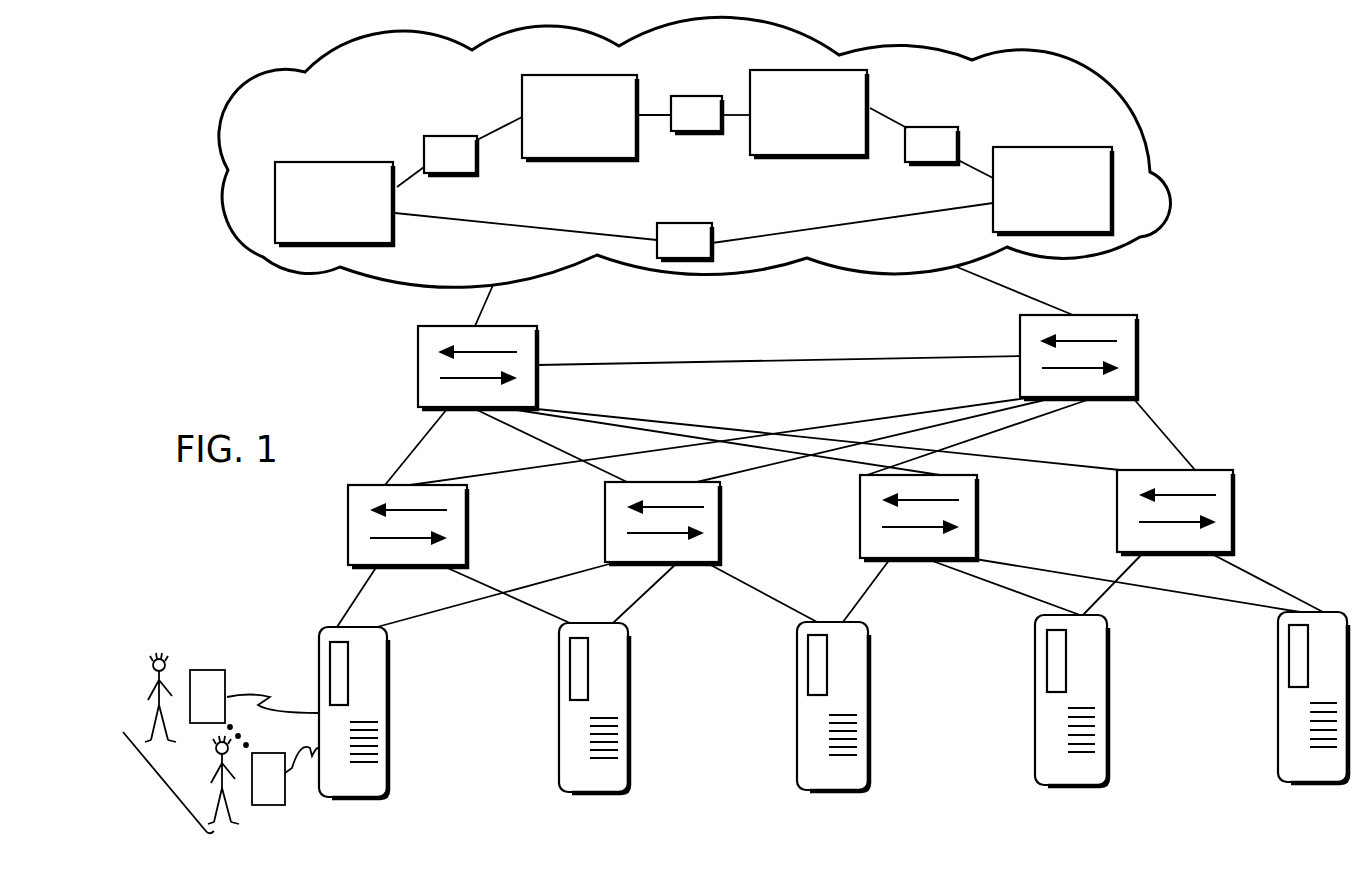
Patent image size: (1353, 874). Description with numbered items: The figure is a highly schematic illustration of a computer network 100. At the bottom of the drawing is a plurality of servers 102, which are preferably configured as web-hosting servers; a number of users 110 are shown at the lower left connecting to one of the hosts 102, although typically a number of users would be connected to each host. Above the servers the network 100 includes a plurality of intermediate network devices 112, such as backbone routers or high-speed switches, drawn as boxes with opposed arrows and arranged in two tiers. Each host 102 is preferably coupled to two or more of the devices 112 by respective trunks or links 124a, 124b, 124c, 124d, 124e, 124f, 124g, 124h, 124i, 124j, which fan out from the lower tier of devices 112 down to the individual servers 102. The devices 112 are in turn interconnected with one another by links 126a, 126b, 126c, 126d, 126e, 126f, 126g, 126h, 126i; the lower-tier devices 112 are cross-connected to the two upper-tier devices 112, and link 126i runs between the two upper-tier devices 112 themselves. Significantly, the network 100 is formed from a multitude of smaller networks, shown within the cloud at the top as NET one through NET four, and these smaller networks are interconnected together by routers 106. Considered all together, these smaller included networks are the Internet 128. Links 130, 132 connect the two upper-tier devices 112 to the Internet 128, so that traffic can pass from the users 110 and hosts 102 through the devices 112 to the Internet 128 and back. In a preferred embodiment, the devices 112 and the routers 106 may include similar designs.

The computer network 100 is at (1262, 438).
The server 102 is at (320, 662).
The router 106 is at (480, 173).
The users 110 is at (165, 786).
The intermediate network device 112 is at (418, 363).
The link 124a is at (352, 603).
The link 124b is at (452, 608).
The link 124c is at (553, 613).
The link 124d is at (640, 594).
The link 124e is at (800, 600).
The link 124f is at (868, 593).
The link 124g is at (1010, 598).
The link 124h is at (1115, 598).
The link 124i is at (1230, 596).
The link 124j is at (1258, 578).
The link 126a is at (412, 448).
The link 126b is at (510, 467).
The link 126c is at (510, 426).
The link 126d is at (747, 466).
The link 126e is at (820, 462).
The link 126f is at (1060, 413).
The link 126g is at (1062, 458).
The link 126h is at (1158, 432).
The link 126i is at (771, 366).
The Internet 128 is at (765, 221).
The link 130 is at (487, 297).
The link 132 is at (1033, 297).